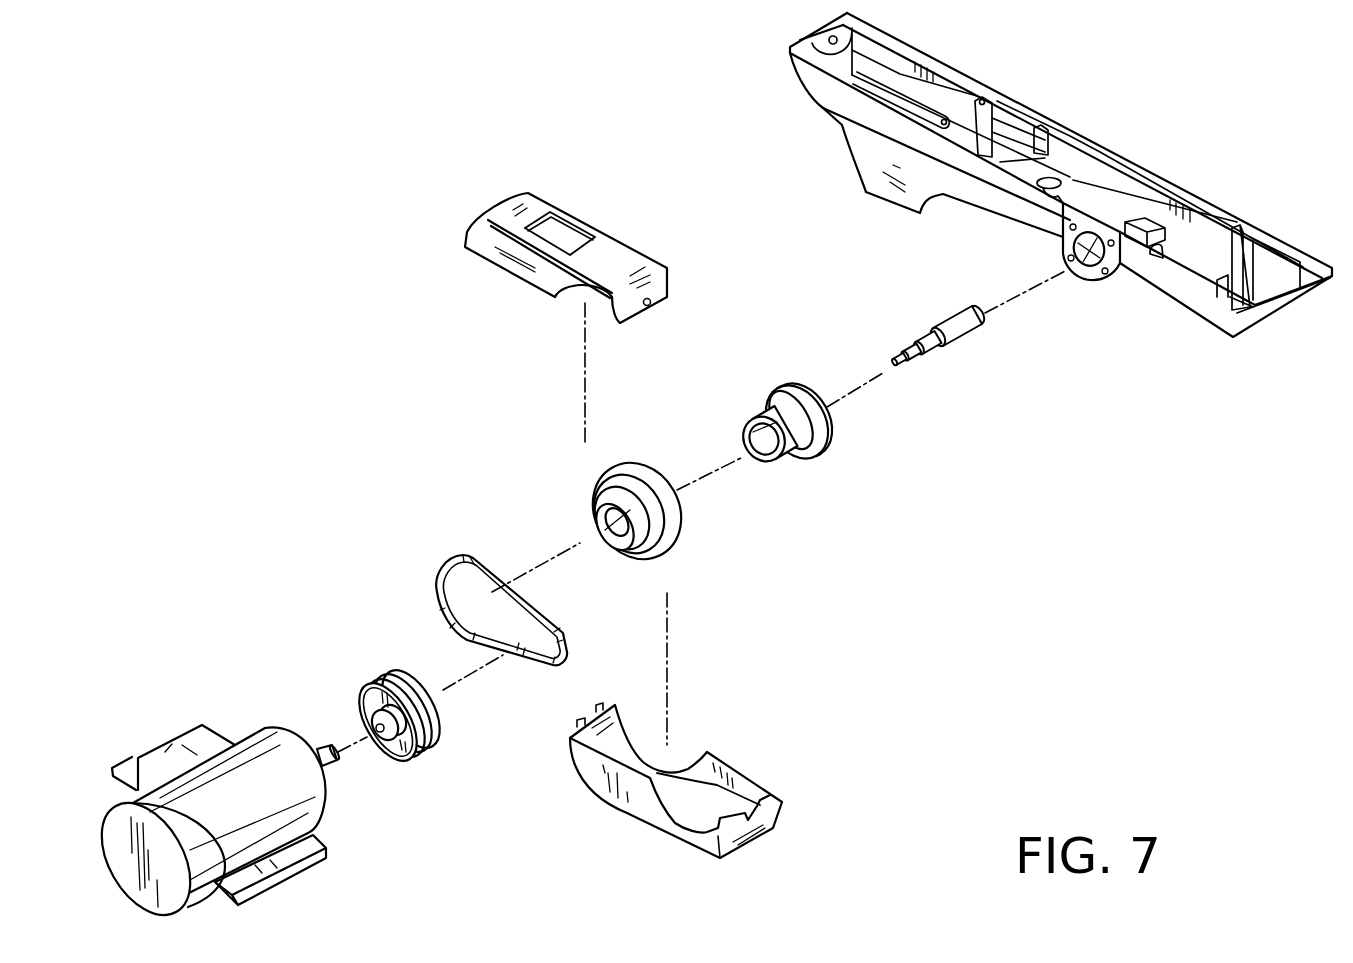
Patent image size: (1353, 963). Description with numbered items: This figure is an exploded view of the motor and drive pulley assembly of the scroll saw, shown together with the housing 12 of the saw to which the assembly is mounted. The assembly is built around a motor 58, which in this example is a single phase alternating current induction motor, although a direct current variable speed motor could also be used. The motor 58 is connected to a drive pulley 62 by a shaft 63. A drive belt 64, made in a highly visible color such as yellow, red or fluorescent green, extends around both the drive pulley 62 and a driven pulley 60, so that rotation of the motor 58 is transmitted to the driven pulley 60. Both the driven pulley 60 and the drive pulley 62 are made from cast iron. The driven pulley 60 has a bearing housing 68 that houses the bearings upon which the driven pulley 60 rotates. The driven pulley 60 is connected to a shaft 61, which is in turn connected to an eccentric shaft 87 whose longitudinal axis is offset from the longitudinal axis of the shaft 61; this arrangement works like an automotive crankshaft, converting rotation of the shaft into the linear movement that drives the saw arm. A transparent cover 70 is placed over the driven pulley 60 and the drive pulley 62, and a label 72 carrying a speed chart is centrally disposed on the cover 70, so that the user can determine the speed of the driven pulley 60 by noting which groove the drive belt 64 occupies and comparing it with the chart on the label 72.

The housing 12 is at (1157, 297).
The motor 58 is at (313, 800).
The driven pulley 60 is at (683, 517).
The shaft 61 is at (937, 355).
The drive pulley 62 is at (437, 730).
The shaft 63 is at (325, 750).
The drive belt 64 is at (437, 593).
The bearing housing 68 is at (827, 435).
The transparent cover 70 is at (548, 202).
The label 72 is at (595, 231).
The eccentric shaft 87 is at (950, 312).